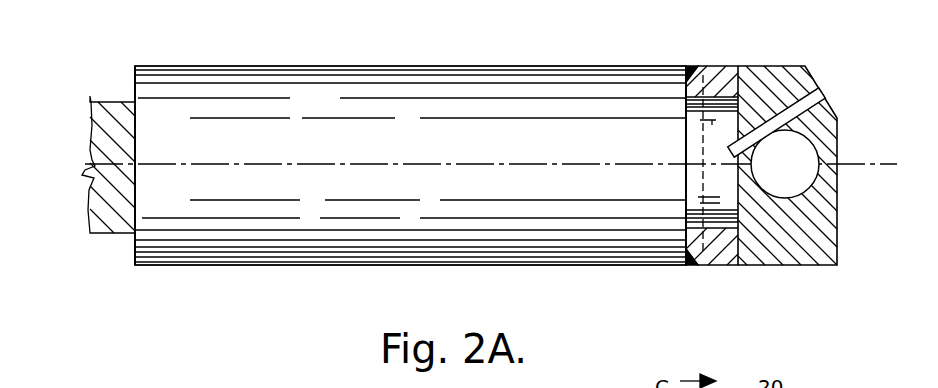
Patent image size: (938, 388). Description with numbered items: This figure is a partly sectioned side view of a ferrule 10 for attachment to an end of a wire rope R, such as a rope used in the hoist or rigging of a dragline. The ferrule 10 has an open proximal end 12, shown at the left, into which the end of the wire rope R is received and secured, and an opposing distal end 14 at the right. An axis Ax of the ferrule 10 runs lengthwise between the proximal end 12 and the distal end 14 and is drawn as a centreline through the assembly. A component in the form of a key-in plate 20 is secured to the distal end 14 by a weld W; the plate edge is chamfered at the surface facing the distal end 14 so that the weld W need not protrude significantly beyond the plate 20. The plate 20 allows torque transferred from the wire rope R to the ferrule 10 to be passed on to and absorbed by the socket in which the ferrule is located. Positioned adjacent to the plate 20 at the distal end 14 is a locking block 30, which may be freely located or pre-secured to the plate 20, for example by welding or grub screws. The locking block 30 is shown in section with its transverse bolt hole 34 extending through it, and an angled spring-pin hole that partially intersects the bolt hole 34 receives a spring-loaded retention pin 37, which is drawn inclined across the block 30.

The ferrule 10 is at (208, 75).
The open proximal end 12 is at (140, 268).
The distal end 14 is at (680, 266).
The key-in plate 20 is at (722, 66).
The locking block 30 is at (797, 72).
The transverse bolt hole 34 is at (803, 150).
The spring-loaded retention pin 37 is at (822, 98).
The weld W is at (693, 65).
The wire rope R is at (116, 236).
The axis Ax is at (870, 165).